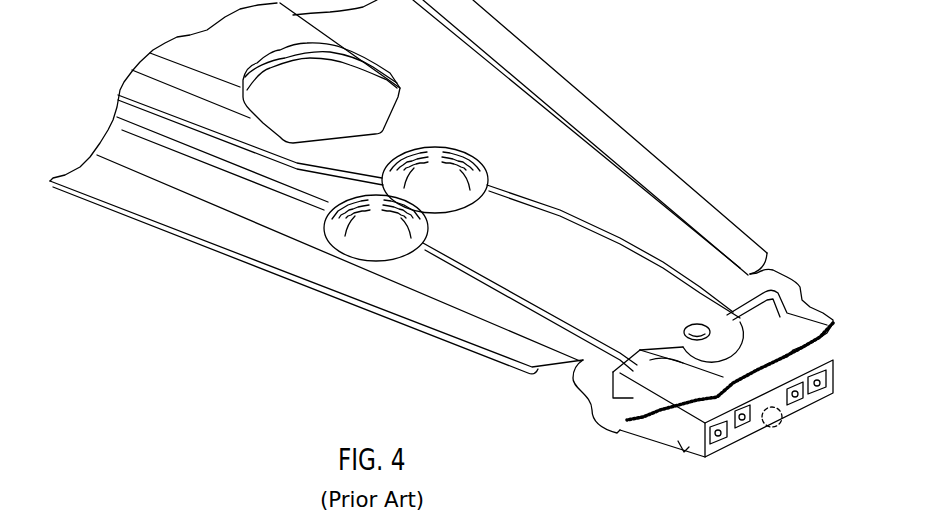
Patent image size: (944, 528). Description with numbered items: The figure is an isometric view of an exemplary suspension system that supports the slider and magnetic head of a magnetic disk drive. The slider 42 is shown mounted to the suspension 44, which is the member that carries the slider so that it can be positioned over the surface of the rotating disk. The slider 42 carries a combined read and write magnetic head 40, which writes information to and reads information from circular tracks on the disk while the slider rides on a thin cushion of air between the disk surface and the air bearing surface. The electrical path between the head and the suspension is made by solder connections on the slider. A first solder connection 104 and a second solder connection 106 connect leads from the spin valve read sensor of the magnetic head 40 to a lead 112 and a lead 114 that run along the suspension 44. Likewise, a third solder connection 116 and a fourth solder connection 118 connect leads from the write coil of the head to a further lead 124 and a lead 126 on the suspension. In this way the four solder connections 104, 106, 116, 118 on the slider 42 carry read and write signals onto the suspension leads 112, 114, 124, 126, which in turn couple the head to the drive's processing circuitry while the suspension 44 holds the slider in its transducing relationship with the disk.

The magnetic head 40 is at (777, 427).
The slider 42 is at (653, 442).
The suspension 44 is at (590, 98).
The first solder connection 104 is at (720, 448).
The second solder connection 106 is at (827, 382).
The lead 112 is at (463, 276).
The lead 114 is at (627, 238).
The third solder connection 116 is at (745, 430).
The fourth solder connection 118 is at (803, 400).
The lead 124 is at (477, 282).
The lead 126 is at (583, 222).